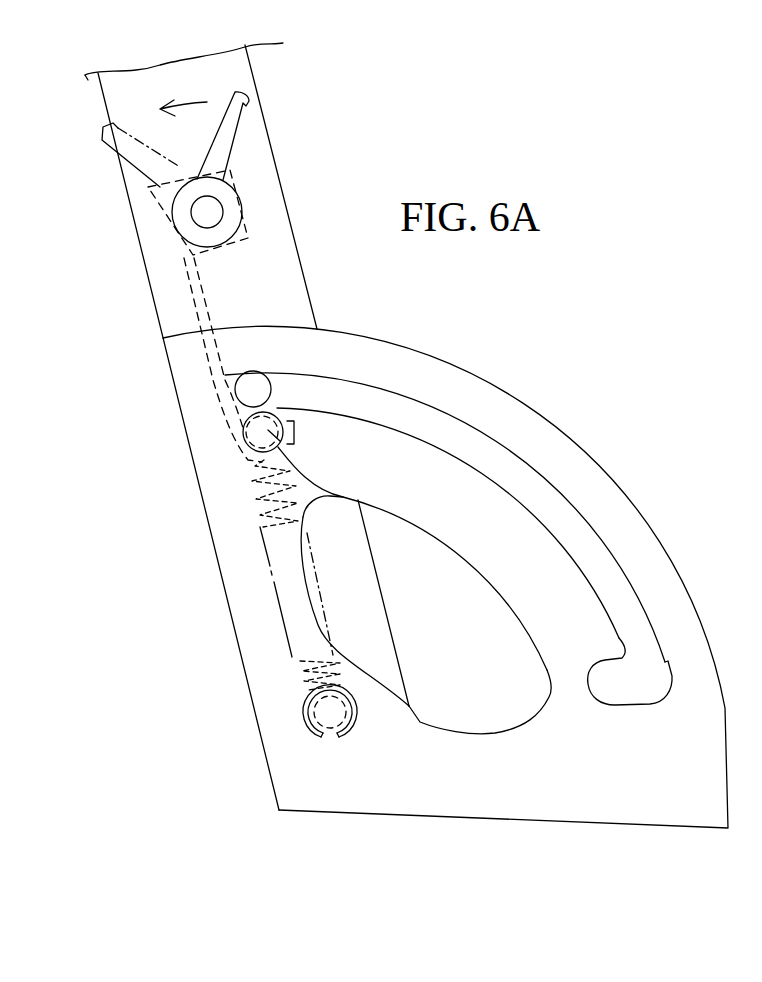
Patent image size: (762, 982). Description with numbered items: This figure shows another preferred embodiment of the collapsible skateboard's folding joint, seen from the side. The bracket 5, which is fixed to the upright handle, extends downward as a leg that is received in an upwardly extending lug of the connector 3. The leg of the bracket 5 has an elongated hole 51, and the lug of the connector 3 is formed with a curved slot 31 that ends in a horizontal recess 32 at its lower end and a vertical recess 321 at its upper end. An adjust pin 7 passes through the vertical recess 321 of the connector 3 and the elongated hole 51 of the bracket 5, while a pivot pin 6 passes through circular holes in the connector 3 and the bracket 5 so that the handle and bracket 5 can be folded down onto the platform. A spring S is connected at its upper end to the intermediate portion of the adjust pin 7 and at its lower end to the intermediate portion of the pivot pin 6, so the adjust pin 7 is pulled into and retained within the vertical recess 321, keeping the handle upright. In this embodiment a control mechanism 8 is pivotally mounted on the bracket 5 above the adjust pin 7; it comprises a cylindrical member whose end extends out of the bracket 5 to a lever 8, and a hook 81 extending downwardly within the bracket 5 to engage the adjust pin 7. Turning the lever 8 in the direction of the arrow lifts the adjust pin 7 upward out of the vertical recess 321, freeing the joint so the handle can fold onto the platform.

The connector 3 is at (663, 587).
The curved slot 31 is at (460, 430).
The horizontal recess 32 is at (641, 707).
The vertical recess 321 is at (330, 497).
The bracket 5 is at (160, 253).
The elongated hole 51 is at (240, 410).
The adjust pin 7 is at (294, 441).
The control mechanism 8 is at (223, 143).
The hook 81 is at (240, 452).
The pivot pin 6 is at (320, 727).
The spring S is at (280, 613).